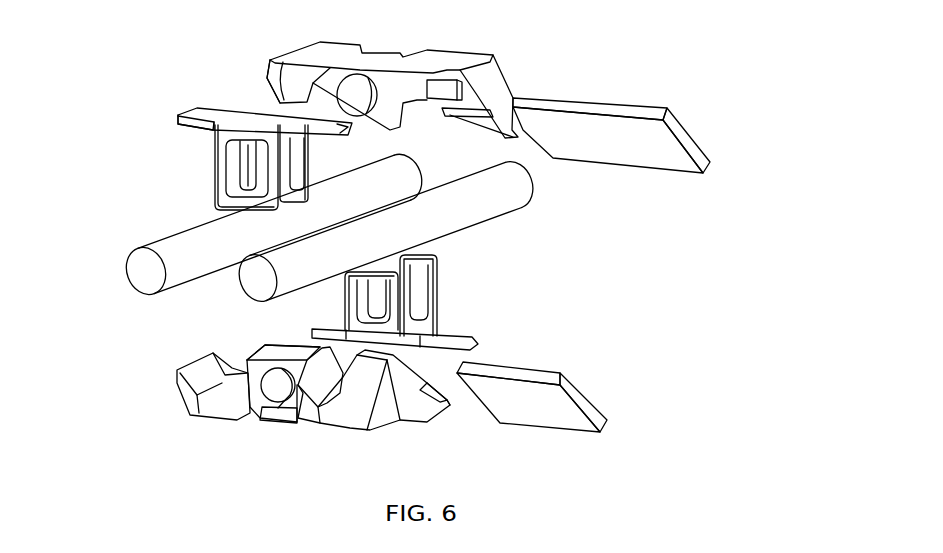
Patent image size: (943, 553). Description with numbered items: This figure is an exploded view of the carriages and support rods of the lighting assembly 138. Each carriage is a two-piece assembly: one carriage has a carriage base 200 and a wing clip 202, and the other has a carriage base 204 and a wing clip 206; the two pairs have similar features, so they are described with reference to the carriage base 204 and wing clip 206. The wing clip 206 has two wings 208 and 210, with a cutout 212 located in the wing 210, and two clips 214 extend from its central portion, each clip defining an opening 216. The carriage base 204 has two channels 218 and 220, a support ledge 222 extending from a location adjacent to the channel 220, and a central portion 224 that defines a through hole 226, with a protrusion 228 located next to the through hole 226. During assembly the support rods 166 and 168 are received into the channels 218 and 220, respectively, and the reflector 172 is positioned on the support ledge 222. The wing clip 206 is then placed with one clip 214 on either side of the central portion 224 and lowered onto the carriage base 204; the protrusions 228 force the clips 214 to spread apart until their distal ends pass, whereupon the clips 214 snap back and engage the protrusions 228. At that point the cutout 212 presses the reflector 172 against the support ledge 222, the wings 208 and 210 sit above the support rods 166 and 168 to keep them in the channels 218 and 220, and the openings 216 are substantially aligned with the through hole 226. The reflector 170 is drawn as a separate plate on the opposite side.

The connector assembly 138 is at (90, 208).
The support rod 166 is at (178, 288).
The support rod 168 is at (503, 217).
The first plate 170 is at (605, 102).
The reflector 172 is at (568, 373).
The carriage base 200 is at (431, 83).
The wing clip 202 is at (435, 330).
The carriage base 204 is at (321, 390).
The wing clip 206 is at (228, 88).
The wing 208 is at (175, 117).
The wing 210 is at (282, 57).
The cutout 212 is at (338, 128).
The clip 214 is at (300, 171).
The opening 216 is at (236, 158).
The channel 218 is at (207, 370).
The channel 220 is at (352, 430).
The support ledge 222 is at (443, 394).
The central portion 224 is at (283, 346).
The through hole 226 is at (280, 410).
The protrusion 228 is at (263, 413).